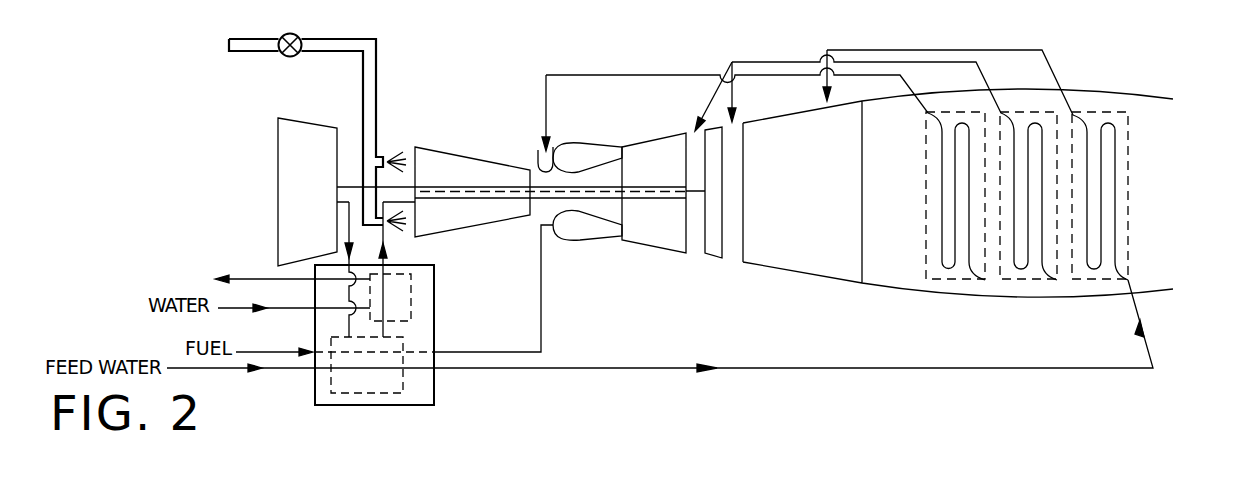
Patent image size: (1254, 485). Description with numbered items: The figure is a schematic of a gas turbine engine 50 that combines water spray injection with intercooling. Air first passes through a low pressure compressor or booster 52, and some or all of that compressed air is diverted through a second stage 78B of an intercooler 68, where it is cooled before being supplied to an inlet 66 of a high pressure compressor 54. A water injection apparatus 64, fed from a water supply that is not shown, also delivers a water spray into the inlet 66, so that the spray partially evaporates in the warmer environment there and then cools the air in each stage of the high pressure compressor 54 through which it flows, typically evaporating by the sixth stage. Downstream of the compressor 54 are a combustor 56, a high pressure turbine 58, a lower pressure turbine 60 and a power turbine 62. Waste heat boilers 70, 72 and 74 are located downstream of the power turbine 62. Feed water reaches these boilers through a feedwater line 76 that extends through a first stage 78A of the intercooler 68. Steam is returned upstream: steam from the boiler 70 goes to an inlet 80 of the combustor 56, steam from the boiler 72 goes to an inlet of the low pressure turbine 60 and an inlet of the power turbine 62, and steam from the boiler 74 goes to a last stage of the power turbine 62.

The gas turbine engine 50 is at (1148, 84).
The low pressure compressor or booster 52 is at (327, 128).
The high pressure compressor 54 is at (510, 220).
The combustor 56 is at (561, 240).
The high pressure turbine 58 is at (640, 246).
The low pressure turbine 60 is at (711, 259).
The power turbine 62 is at (790, 272).
The water injection apparatus 64 is at (378, 82).
The inlet of high pressure compressor 66 is at (410, 152).
The intercooler 68 is at (434, 392).
The waste heat boiler 70 is at (926, 183).
The waste heat boiler 72 is at (1026, 280).
The waste heat boiler 74 is at (1130, 163).
The feedwater line 76 is at (661, 366).
The first stage of intercooler 78A is at (378, 393).
The second stage of intercooler 78B is at (411, 321).
The inlet of combustor 80 is at (538, 152).